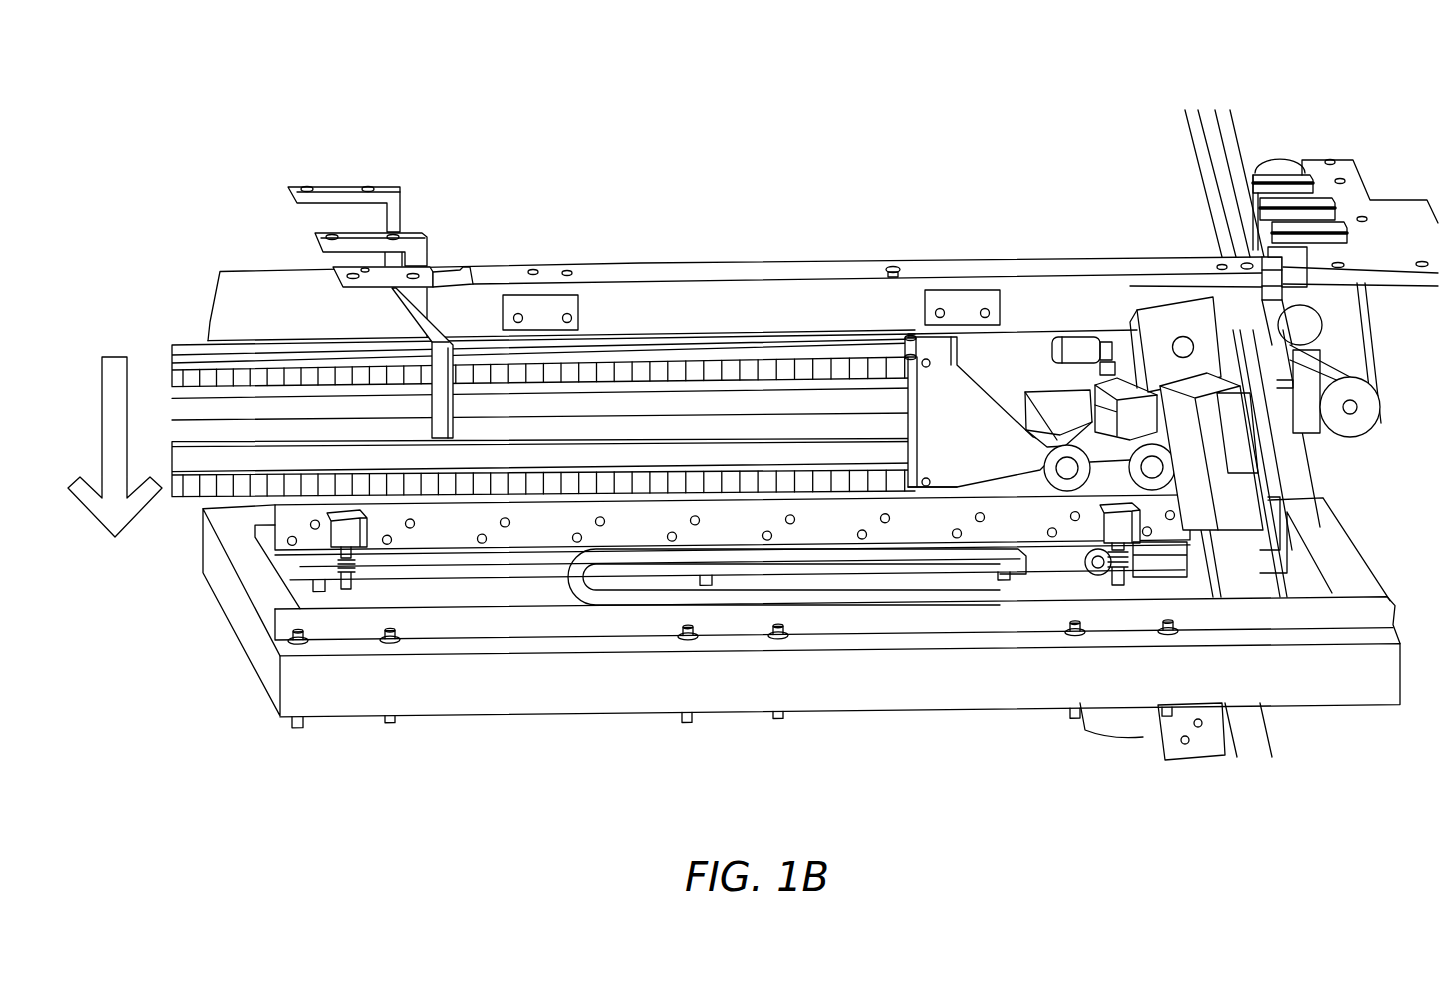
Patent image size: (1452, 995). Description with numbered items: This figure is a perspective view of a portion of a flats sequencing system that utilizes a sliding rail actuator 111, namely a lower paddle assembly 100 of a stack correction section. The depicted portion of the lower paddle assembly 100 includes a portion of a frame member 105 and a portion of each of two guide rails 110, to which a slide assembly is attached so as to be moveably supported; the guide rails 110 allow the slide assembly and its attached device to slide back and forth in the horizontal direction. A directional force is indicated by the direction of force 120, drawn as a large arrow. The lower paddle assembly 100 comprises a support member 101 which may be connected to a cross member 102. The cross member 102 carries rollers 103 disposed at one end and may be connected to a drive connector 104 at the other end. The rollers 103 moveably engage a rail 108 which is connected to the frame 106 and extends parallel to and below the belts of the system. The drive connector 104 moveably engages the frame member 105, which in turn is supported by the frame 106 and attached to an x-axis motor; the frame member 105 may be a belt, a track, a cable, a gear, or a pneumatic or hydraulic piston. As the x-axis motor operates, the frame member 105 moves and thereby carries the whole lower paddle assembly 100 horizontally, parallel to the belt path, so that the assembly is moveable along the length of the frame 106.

The lower paddle assembly 100 is at (1072, 90).
The support member 101 is at (1277, 457).
The cross member 102 is at (1145, 553).
The rollers 103 is at (1150, 482).
The drive connector 104 is at (937, 450).
The frame member 105 is at (292, 460).
The frame 106 is at (538, 622).
The rail 108 is at (452, 527).
The guide rails 110 is at (520, 467).
The sliding rail actuator 111 is at (162, 545).
The direction of force 120 is at (102, 398).